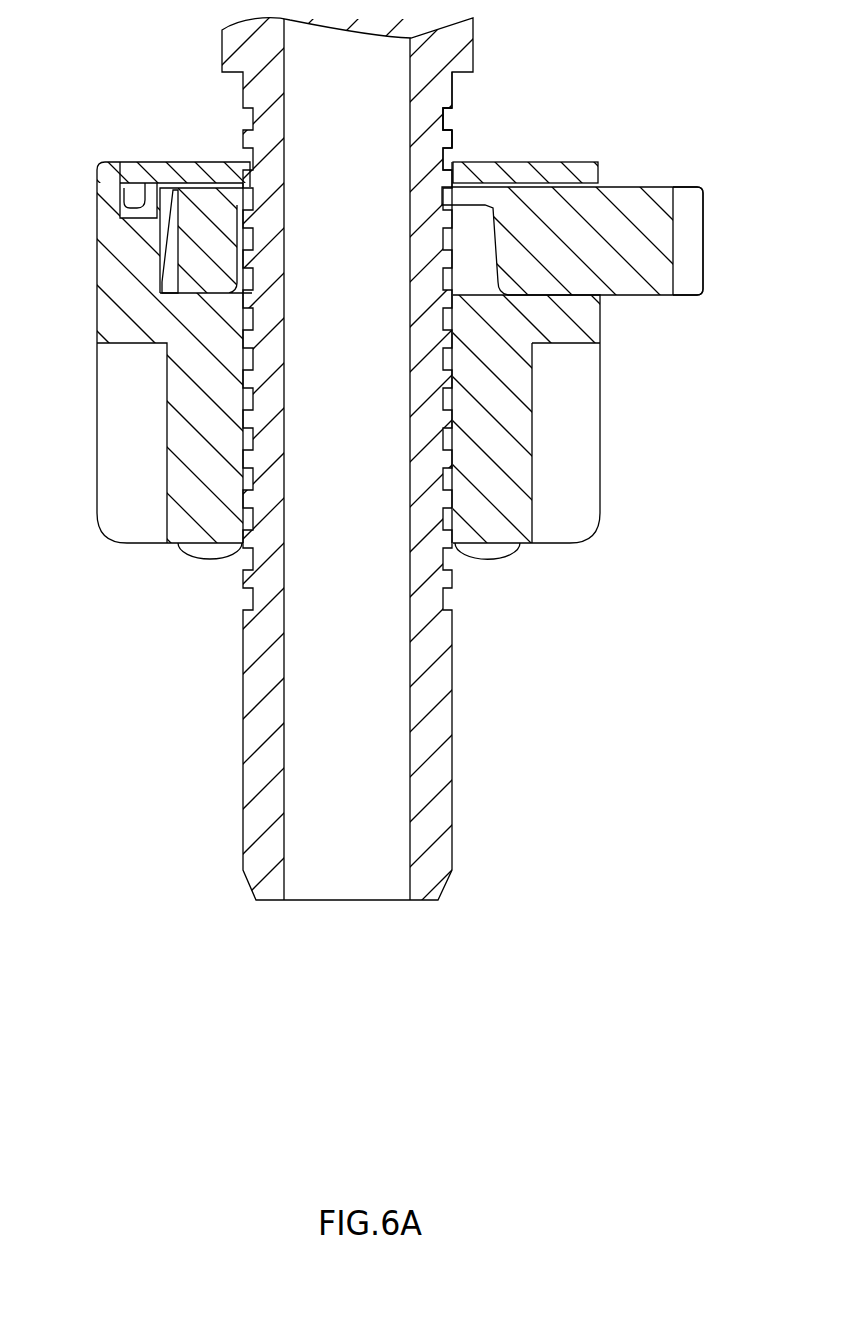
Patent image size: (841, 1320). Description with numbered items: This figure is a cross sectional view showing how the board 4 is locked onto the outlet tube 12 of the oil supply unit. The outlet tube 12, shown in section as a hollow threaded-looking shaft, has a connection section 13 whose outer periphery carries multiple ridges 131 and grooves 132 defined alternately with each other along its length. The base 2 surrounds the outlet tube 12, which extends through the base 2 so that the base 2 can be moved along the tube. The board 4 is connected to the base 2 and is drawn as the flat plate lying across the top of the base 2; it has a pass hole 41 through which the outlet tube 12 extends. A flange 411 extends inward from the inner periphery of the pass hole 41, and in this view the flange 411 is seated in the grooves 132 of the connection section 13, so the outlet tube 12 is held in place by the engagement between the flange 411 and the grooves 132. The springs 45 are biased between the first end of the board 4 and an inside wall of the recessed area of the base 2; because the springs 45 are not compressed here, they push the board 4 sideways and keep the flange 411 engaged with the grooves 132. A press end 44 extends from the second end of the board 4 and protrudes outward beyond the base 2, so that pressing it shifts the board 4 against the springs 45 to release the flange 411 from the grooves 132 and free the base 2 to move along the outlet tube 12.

The outlet tube 12 is at (222, 48).
The connection section 13 is at (533, 67).
The ridges 131 is at (448, 138).
The grooves 132 is at (445, 118).
The base 2 is at (537, 480).
The board 4 is at (668, 184).
The pass hole 41 is at (467, 198).
The press end 44 is at (684, 288).
The flange 411 is at (250, 195).
The springs 45 is at (167, 246).